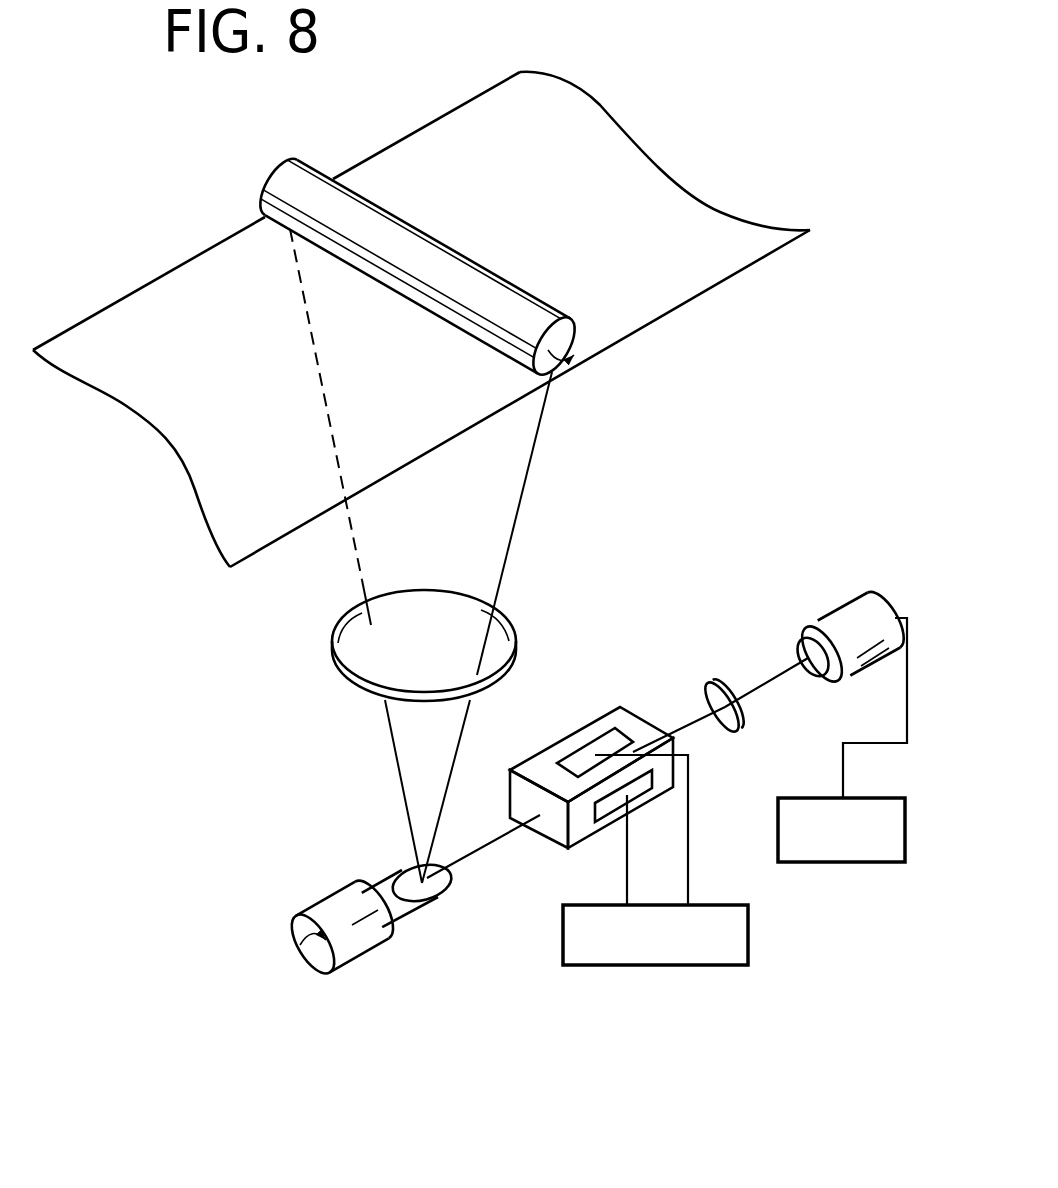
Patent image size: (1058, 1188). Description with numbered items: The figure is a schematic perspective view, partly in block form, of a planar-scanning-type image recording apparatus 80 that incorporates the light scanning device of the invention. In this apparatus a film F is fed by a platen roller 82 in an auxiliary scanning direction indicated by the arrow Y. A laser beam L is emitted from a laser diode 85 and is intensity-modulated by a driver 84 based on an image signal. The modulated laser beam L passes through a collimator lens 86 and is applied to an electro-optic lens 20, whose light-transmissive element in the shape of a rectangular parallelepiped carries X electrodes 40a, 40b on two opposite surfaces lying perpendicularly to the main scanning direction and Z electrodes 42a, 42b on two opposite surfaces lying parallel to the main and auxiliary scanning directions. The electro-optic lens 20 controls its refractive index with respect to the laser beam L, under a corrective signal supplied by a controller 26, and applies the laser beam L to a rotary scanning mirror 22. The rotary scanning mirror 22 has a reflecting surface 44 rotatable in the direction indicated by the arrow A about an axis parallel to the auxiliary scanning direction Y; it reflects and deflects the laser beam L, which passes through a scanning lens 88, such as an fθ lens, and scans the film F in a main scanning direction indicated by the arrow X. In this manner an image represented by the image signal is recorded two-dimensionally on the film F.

The planar-scanning-type image recording apparatus 80 is at (608, 84).
The platen roller 82 is at (317, 182).
The scanning lens 88 is at (435, 607).
The electro-optic lens 20 is at (565, 818).
The Z electrode 42a is at (582, 758).
The Z electrode 42b is at (579, 714).
The X electrode 40a is at (603, 817).
The X electrode 40b is at (554, 895).
The collimator lens 86 is at (727, 680).
The laser diode 85 is at (850, 612).
The driver 84 is at (848, 864).
The controller 26 is at (752, 952).
The rotary scanning mirror 22 is at (362, 933).
The reflecting surface 44 is at (437, 890).
The laser beam L is at (483, 850).
The film F is at (480, 110).
The direction of rotation of the reflecting surface A is at (279, 960).
The main scanning direction X is at (333, 273).
The auxiliary scanning direction Y is at (598, 175).